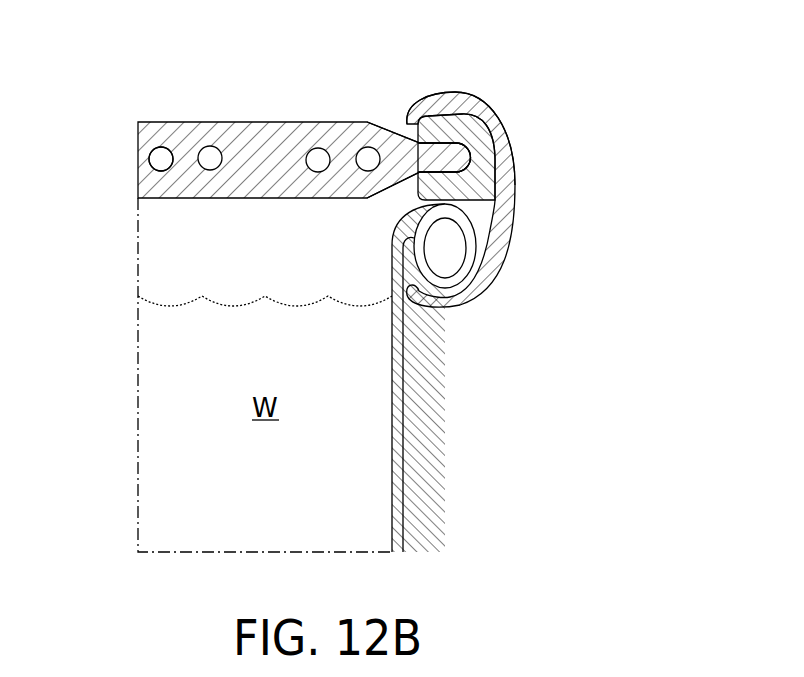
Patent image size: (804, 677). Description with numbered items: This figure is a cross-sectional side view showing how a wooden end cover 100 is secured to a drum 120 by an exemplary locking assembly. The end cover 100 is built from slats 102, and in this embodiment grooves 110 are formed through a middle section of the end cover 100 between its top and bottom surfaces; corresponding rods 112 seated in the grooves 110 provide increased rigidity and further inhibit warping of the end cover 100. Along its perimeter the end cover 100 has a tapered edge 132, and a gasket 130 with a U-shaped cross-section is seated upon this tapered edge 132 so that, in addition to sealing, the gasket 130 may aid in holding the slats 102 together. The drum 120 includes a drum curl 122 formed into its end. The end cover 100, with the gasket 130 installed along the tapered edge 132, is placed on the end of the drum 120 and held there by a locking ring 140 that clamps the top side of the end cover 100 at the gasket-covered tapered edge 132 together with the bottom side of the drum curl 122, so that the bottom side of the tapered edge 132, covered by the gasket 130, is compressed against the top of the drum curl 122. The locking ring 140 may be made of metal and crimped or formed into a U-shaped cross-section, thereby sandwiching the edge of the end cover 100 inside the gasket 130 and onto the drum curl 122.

The end cover 100 is at (287, 168).
The slats 102 is at (342, 121).
The grooves 110 is at (156, 154).
The rods 112 is at (152, 160).
The drum 120 is at (405, 430).
The drum curl 122 is at (444, 297).
The gasket 130 is at (512, 218).
The tapered edge 132 is at (452, 160).
The locking ring 140 is at (497, 110).